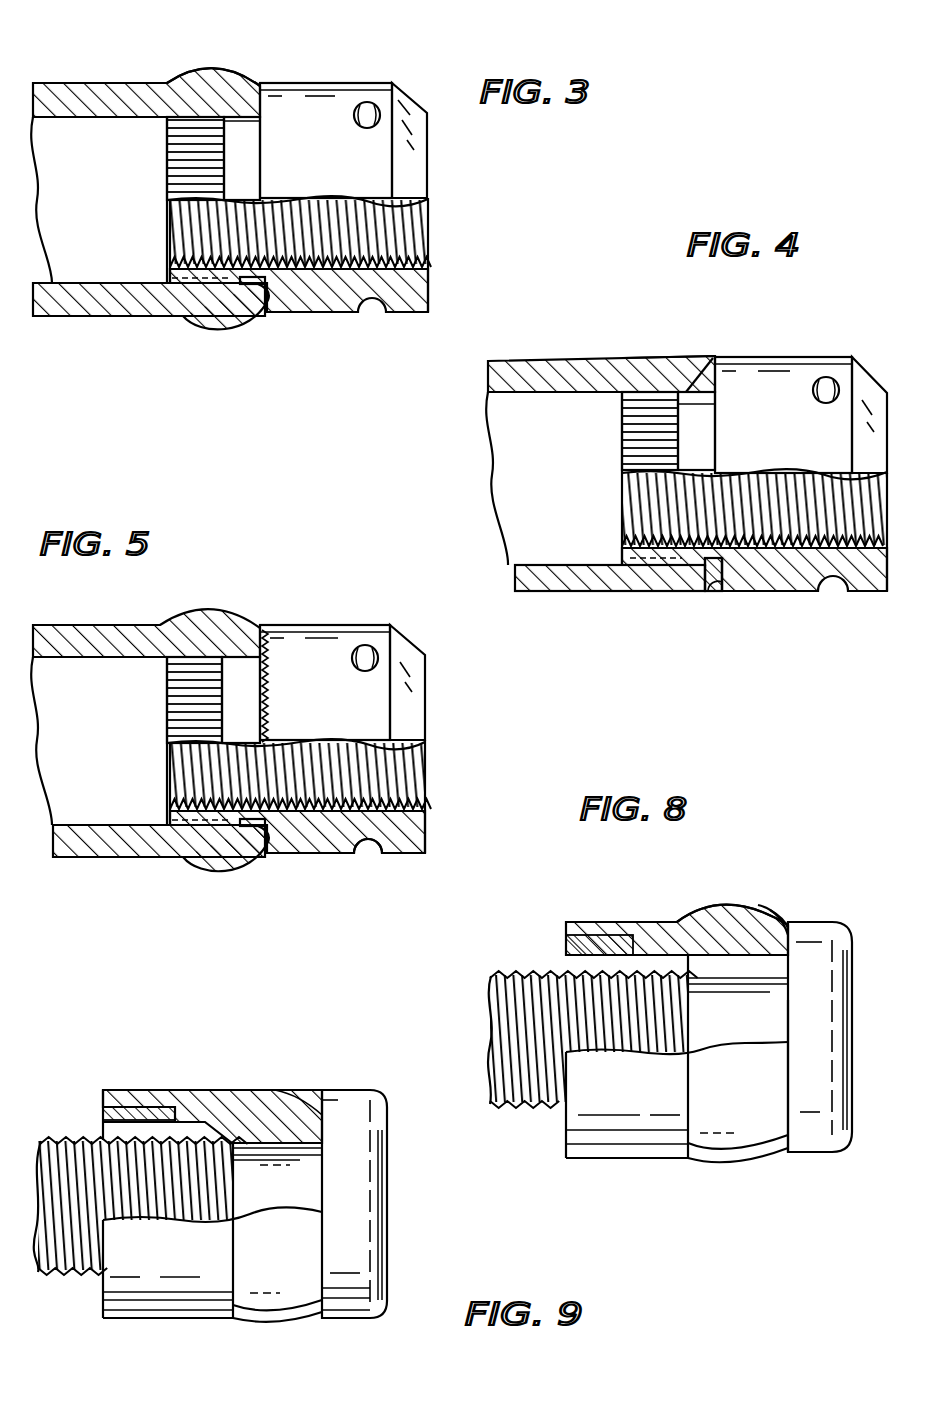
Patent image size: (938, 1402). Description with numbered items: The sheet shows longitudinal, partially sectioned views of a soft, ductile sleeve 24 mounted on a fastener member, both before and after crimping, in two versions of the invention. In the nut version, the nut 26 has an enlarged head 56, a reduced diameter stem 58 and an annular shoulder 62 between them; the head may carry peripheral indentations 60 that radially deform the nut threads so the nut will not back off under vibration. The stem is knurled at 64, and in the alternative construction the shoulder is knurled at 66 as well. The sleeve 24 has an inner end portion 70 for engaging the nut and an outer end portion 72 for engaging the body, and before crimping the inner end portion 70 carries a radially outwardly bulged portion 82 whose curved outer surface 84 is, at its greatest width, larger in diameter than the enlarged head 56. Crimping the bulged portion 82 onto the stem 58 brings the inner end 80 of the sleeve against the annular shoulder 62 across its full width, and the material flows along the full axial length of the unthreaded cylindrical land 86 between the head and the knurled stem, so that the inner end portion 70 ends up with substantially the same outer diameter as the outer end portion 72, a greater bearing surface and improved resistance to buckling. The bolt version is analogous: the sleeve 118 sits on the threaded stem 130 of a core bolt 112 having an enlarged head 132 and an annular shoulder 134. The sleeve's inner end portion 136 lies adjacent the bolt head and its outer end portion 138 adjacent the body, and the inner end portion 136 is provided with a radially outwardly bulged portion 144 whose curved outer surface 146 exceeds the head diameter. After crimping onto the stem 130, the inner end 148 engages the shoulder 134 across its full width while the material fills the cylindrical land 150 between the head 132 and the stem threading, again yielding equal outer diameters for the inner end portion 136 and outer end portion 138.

In FIG. 5, the sleeve 24 is at (80, 627).
In FIG. 5, the nut 26 is at (316, 640).
In FIG. 3, the enlarged head 56 is at (330, 101).
In FIG. 4, the enlarged head 56 is at (782, 357).
In FIG. 5, the enlarged head 56 is at (336, 855).
In FIG. 3, the stem 58 is at (238, 323).
In FIG. 4, the stem 58 is at (703, 593).
In FIG. 5, the stem 58 is at (240, 866).
In FIG. 5, the indentations 60 is at (368, 856).
In FIG. 3, the annular shoulder 62 is at (256, 296).
In FIG. 4, the annular shoulder 62 is at (713, 593).
In FIG. 5, the annular shoulder 62 is at (252, 836).
In FIG. 3, the knurled stem 64 is at (183, 156).
In FIG. 4, the knurled stem 64 is at (630, 432).
In FIG. 5, the knurled stem 64 is at (176, 694).
In FIG. 5, the knurled shoulder 66 is at (272, 700).
In FIG. 3, the inner end portion 70 is at (212, 66).
In FIG. 4, the inner end portion 70 is at (656, 356).
In FIG. 4, the outer end portion 72 is at (525, 361).
In FIG. 4, the inner end 80 is at (724, 593).
In FIG. 3, the radially outwardly bulged portion 82 is at (172, 84).
In FIG. 3, the curved outer surface 84 is at (255, 85).
In FIG. 4, the unthreaded cylindrical land 86 is at (692, 390).
In FIG. 8, the core bolt 112 is at (805, 1105).
In FIG. 8, the sleeve 118 is at (622, 1120).
In FIG. 9, the sleeve 118 is at (212, 1232).
In FIG. 8, the stem 130 is at (640, 1022).
In FIG. 9, the stem 130 is at (215, 1185).
In FIG. 8, the enlarged head 132 is at (805, 930).
In FIG. 9, the enlarged head 132 is at (357, 1162).
In FIG. 8, the annular shoulder 134 is at (770, 908).
In FIG. 9, the annular shoulder 134 is at (290, 1092).
In FIG. 8, the inner end portion 136 is at (712, 904).
In FIG. 9, the inner end portion 136 is at (262, 1092).
In FIG. 9, the outer end portion 138 is at (117, 1090).
In FIG. 8, the radially outwardly bulged portion 144 is at (684, 922).
In FIG. 8, the curved outer surface 146 is at (742, 904).
In FIG. 9, the inner end 148 is at (330, 1098).
In FIG. 9, the cylindrical land 150 is at (234, 1100).